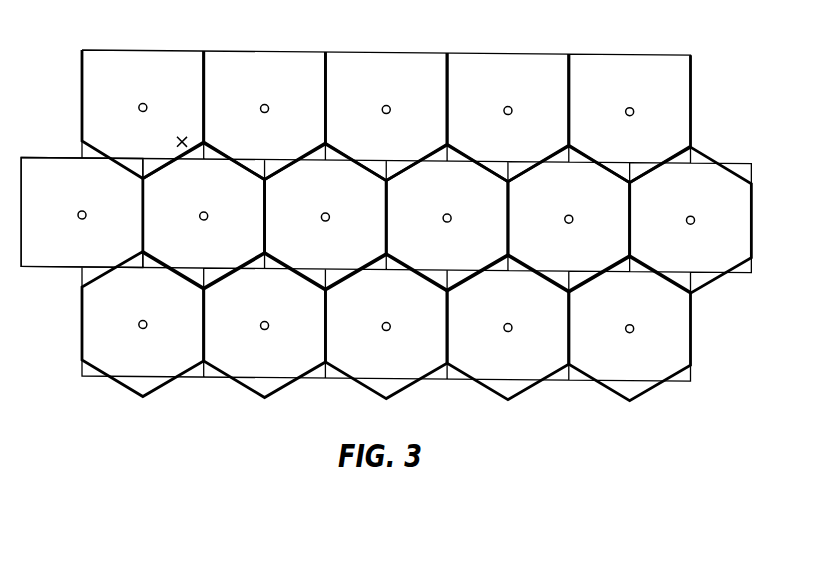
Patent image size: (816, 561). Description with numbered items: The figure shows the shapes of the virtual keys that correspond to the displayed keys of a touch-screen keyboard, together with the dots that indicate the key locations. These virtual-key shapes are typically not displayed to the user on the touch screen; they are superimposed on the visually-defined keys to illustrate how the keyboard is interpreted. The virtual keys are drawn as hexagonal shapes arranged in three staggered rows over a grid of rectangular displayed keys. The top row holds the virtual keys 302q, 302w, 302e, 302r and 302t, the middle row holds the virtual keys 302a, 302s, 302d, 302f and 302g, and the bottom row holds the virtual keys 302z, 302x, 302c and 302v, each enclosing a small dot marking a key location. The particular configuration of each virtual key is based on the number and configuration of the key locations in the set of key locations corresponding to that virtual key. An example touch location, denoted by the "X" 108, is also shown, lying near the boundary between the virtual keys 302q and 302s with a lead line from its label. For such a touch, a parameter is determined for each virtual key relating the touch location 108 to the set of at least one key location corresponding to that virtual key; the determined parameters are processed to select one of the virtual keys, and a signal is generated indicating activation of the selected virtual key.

The touch location 108 is at (181, 136).
The virtual key 302q is at (143, 114).
The virtual key 302w is at (265, 115).
The virtual key 302e is at (386, 116).
The virtual key 302r is at (508, 117).
The virtual key 302t is at (630, 118).
The virtual key 302a is at (82, 212).
The virtual key 302s is at (204, 216).
The virtual key 302d is at (326, 217).
The virtual key 302f is at (447, 218).
The virtual key 302g is at (569, 219).
The virtual key 302z is at (143, 324).
The virtual key 302x is at (265, 325).
The virtual key 302c is at (386, 326).
The virtual key 302v is at (508, 327).